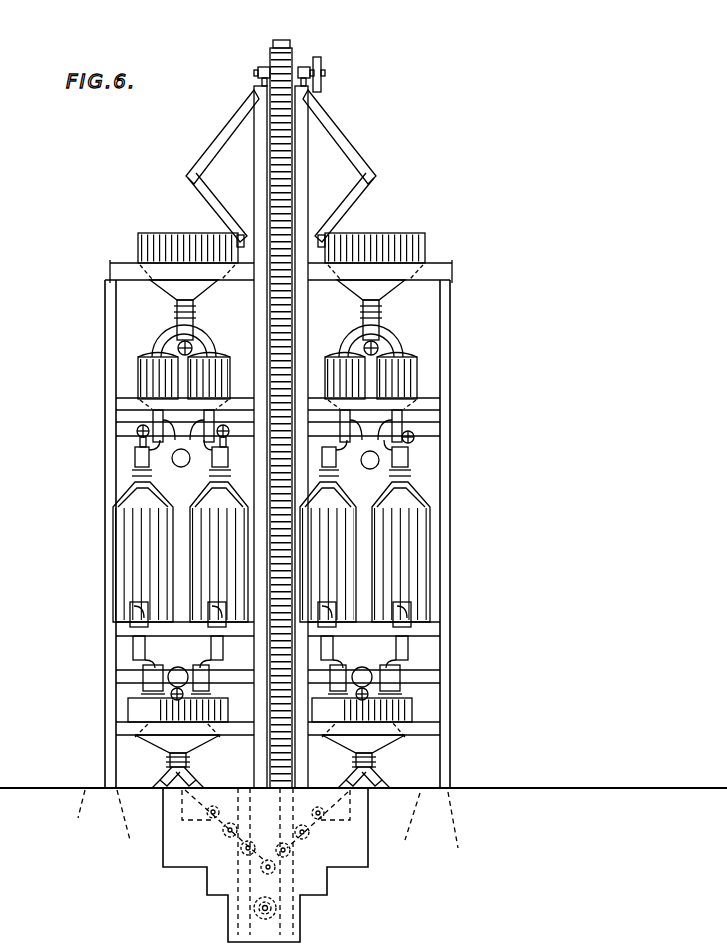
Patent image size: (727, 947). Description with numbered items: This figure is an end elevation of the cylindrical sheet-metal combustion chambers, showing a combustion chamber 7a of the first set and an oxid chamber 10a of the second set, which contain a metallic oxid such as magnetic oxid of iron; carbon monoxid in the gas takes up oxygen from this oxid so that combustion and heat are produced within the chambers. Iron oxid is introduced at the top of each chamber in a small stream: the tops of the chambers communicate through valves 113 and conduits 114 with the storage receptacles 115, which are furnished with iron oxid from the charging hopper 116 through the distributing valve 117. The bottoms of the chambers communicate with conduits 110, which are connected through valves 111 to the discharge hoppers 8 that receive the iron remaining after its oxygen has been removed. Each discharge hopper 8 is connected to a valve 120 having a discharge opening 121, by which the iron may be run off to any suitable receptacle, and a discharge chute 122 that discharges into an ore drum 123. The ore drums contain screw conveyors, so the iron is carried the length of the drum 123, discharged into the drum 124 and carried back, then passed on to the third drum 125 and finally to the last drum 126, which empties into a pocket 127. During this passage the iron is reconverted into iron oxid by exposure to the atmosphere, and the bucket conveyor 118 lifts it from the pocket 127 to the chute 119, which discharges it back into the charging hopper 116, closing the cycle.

The bucket conveyor 118 is at (292, 44).
The chute 119 is at (237, 140).
The charging hopper 116 is at (169, 240).
The distributing valve 117 is at (198, 328).
The storage receptacles 115 is at (151, 352).
The conduits 114 is at (120, 430).
The valves 113 is at (130, 456).
The combustion chamber 7a is at (145, 559).
The oxid chamber 10a is at (334, 559).
The conduits 110 is at (130, 660).
The valves 111 is at (143, 678).
The discharge hopper 8 is at (142, 711).
The valves 120 is at (168, 776).
The discharge openings 121 is at (166, 789).
The discharge chutes 122 is at (192, 779).
The ore drums 123 is at (268, 865).
The ore drums 124 is at (306, 832).
The ore drum 125 is at (290, 848).
The ore drum 126 is at (262, 862).
The pocket 127 is at (276, 906).